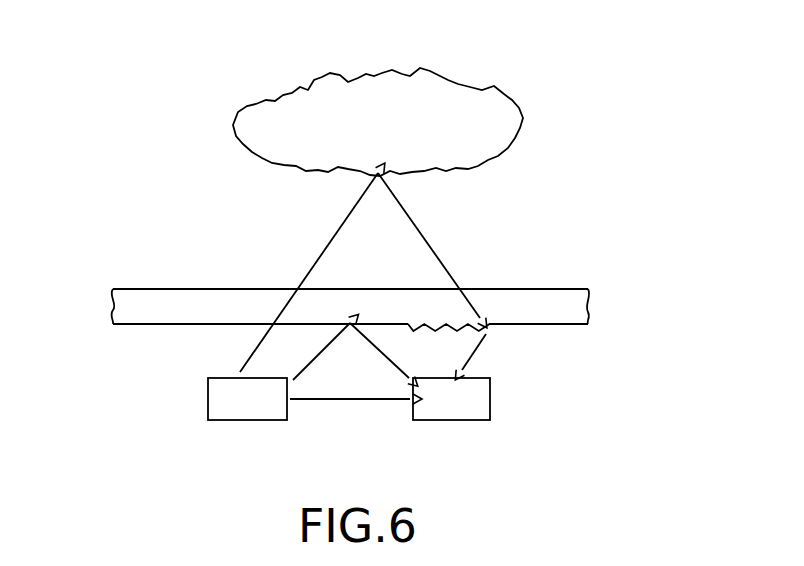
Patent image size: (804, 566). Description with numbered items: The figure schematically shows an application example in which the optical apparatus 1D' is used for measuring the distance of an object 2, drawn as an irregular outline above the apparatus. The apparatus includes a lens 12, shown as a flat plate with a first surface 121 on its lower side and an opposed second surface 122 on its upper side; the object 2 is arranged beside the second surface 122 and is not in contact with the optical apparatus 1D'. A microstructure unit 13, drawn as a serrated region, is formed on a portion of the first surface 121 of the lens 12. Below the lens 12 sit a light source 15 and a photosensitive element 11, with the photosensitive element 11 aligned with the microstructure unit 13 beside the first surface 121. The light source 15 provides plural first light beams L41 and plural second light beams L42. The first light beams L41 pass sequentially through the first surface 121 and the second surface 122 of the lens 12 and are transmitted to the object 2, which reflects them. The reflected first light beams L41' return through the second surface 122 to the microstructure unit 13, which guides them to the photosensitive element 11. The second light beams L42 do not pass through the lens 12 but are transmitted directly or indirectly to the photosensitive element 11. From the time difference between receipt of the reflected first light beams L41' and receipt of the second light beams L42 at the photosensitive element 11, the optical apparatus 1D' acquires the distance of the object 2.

The optical apparatus 1D' is at (557, 24).
The object 2 is at (287, 108).
The photosensitive element 11 is at (448, 410).
The lens 12 is at (151, 306).
The microstructure unit 13 is at (423, 322).
The light source 15 is at (228, 392).
The first surface 121 is at (550, 325).
The second surface 122 is at (552, 289).
The first light beams L41 is at (309, 272).
The reflected first light beams L41' is at (464, 298).
The second light beams L42 is at (323, 345).